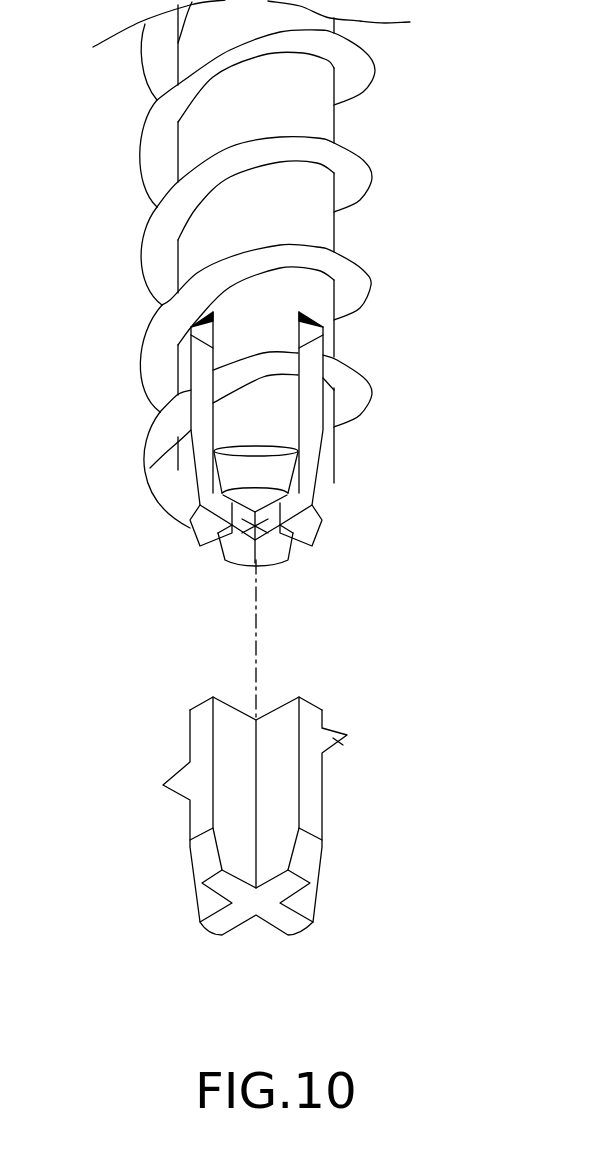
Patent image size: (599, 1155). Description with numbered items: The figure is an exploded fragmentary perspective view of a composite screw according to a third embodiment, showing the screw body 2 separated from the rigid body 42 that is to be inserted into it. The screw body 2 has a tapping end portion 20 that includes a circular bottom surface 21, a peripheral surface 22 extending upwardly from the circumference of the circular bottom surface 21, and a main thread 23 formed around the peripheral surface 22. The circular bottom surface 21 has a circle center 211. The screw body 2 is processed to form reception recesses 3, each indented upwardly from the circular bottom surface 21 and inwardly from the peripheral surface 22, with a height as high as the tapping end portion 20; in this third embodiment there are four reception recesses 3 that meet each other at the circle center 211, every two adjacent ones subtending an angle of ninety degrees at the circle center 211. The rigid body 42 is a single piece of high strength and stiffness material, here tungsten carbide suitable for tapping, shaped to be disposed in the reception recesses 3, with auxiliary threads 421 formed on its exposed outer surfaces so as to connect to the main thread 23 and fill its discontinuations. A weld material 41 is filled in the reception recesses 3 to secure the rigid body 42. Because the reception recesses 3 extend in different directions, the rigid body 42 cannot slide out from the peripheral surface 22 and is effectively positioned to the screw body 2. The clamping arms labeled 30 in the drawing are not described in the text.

The screw body 2 is at (295, 336).
The tapping end portion 20 is at (255, 429).
The circular bottom surface 21 is at (274, 559).
The circle center 211 is at (248, 563).
The peripheral surface 22 is at (330, 228).
The main thread 23 is at (150, 233).
The reception recess 3 is at (283, 565).
The clamping prong 30 is at (203, 453).
The weld material 41 is at (233, 300).
The rigid body 42 is at (309, 816).
The auxiliary thread 421 is at (333, 738).